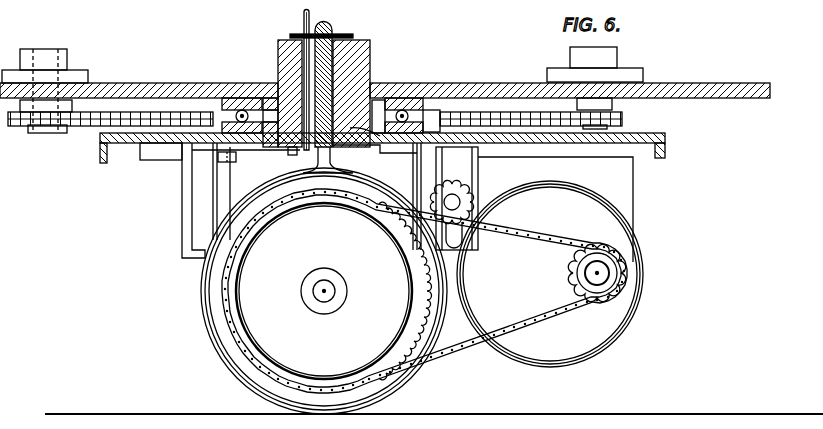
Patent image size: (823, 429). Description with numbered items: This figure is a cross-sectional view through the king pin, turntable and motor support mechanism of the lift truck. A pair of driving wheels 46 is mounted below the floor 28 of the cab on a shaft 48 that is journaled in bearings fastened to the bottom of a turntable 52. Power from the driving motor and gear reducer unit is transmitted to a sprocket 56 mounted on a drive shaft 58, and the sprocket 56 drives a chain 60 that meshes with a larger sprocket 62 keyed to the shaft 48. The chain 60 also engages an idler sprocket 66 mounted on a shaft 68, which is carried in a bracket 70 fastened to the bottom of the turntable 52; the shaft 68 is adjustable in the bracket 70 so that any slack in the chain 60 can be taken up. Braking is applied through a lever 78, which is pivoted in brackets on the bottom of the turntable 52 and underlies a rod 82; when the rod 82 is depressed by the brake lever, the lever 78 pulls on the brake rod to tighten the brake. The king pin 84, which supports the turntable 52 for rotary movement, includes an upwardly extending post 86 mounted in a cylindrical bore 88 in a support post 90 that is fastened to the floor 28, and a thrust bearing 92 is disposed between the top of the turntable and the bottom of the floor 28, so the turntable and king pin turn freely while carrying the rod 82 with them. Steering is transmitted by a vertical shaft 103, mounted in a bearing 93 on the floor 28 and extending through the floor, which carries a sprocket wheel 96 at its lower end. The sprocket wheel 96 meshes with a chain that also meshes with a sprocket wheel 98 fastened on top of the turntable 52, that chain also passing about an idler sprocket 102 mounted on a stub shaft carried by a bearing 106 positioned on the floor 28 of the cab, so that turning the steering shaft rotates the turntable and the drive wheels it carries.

The floor 28 is at (160, 86).
The driving wheels 46 is at (233, 371).
The shaft 48 is at (321, 293).
The turntable 52 is at (666, 151).
The sprocket 56 is at (574, 282).
The drive shaft 58 is at (598, 273).
The chain 60 is at (452, 358).
The larger sprocket 62 is at (405, 321).
The idler sprocket 66 is at (471, 200).
The shaft 68 is at (451, 193).
The bracket 70 is at (463, 252).
The lever 78 is at (308, 168).
The rod 82 is at (303, 17).
The king pin 84 is at (372, 52).
The post 86 is at (373, 137).
The cylindrical bore 88 is at (348, 72).
The support post 90 is at (278, 57).
The thrust bearing 92 is at (240, 112).
The bearing 93 is at (627, 68).
The sprocket wheel 96 is at (624, 118).
The sprocket wheel 98 is at (442, 108).
The idler sprocket 102 is at (38, 124).
The vertical shaft 103 is at (600, 46).
The bearing 106 is at (68, 57).